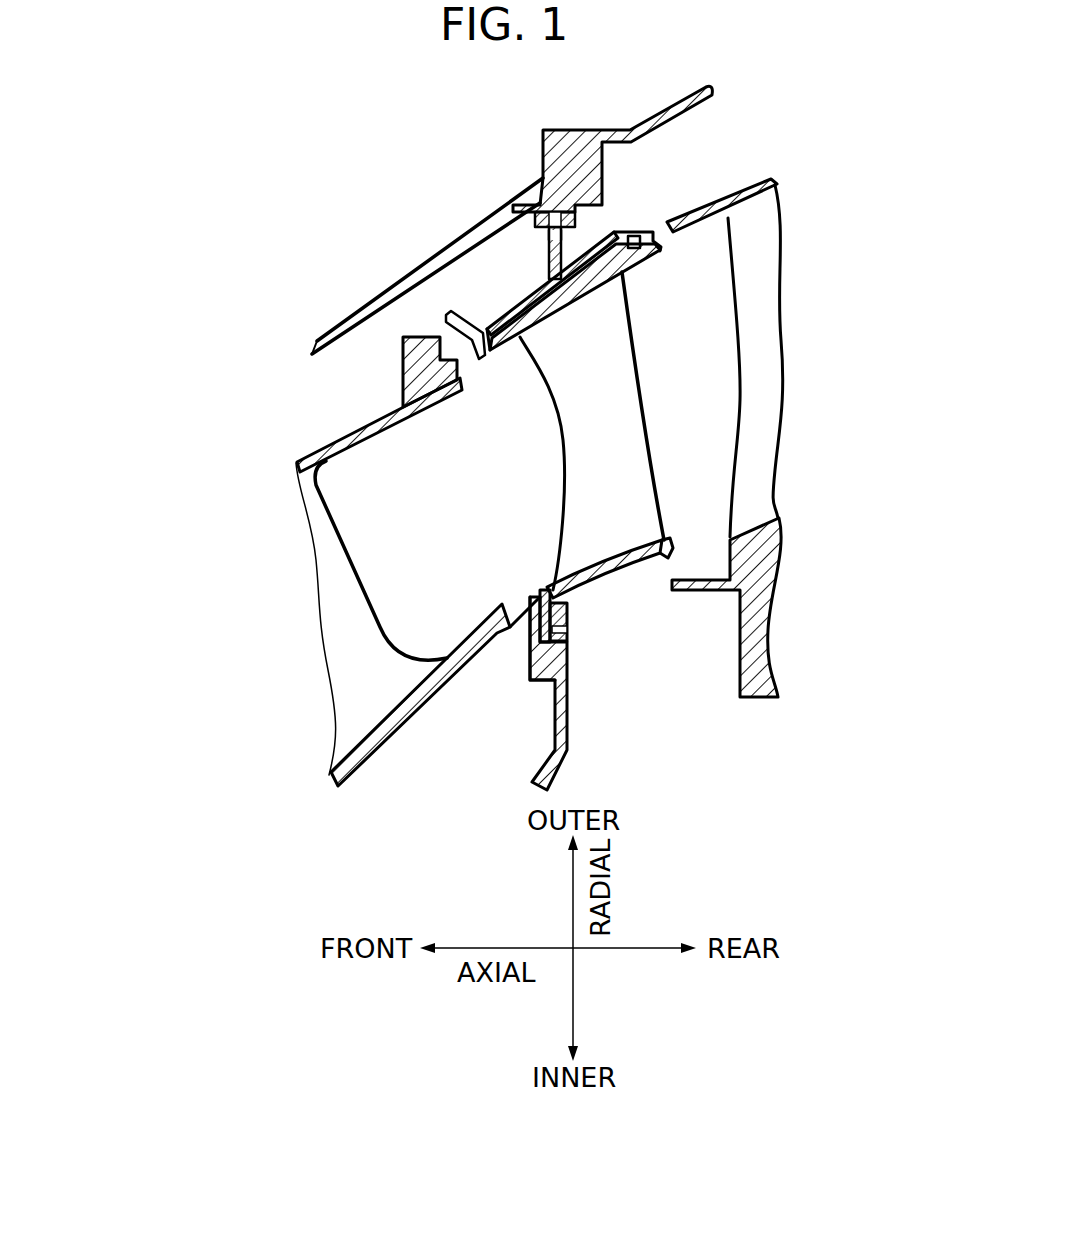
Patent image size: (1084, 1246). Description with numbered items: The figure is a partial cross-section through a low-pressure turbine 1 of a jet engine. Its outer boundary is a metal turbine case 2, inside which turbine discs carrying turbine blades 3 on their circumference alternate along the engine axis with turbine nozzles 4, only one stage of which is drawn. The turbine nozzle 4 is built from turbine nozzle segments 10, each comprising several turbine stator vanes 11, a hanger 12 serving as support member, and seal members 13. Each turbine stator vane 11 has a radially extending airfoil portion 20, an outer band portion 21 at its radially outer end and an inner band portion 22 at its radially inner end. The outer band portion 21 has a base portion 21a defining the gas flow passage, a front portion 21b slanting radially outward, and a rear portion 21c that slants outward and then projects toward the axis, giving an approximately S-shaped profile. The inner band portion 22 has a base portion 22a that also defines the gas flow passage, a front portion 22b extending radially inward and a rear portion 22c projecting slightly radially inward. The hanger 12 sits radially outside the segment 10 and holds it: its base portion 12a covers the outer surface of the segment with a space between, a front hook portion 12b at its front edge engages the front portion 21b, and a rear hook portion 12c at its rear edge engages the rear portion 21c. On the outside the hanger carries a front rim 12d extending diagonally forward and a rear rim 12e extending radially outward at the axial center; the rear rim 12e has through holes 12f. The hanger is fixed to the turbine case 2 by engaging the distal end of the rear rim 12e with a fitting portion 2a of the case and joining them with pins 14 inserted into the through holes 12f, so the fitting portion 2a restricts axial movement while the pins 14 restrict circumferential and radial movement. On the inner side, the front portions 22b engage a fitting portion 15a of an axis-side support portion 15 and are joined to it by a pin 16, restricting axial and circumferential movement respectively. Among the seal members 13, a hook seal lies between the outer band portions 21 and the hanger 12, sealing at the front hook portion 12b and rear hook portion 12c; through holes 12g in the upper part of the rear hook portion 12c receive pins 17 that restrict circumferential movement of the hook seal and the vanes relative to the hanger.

The low-pressure turbine 1 is at (300, 400).
The turbine case 2 is at (600, 129).
The fitting portion 2a is at (545, 212).
The turbine blades 3 is at (755, 403).
The turbine nozzle 4 is at (610, 607).
The turbine nozzle segment 10 is at (633, 580).
The turbine stator vane 11 is at (558, 468).
The hanger 12 is at (497, 290).
The base portion 12a is at (505, 283).
The front hook portion 12b is at (472, 352).
The rear hook portion 12c is at (637, 250).
The front rim 12d is at (478, 348).
The rear rim 12e is at (547, 263).
The through holes 12f is at (537, 232).
The through holes 12g is at (633, 236).
The seal members 13 is at (600, 283).
The pins 14 is at (563, 255).
The axis-side support portion 15 is at (569, 728).
The fitting portion 15a is at (537, 657).
The pin 16 is at (560, 630).
The pins 17 is at (632, 232).
The airfoil portion 20 is at (620, 447).
The outer band portion 21 is at (578, 313).
The base portion 21a is at (549, 325).
The front portion 21b is at (493, 343).
The rear portion 21c is at (637, 262).
The inner band portion 22 is at (566, 556).
The base portion 22a is at (633, 545).
The front portion 22b is at (532, 603).
The rear portion 22c is at (677, 557).